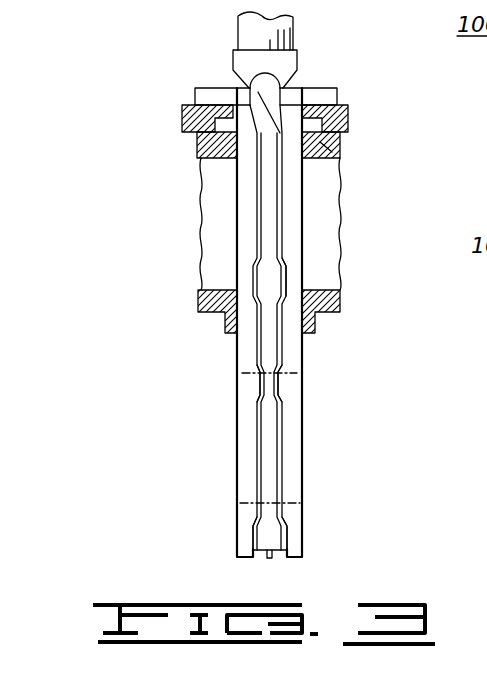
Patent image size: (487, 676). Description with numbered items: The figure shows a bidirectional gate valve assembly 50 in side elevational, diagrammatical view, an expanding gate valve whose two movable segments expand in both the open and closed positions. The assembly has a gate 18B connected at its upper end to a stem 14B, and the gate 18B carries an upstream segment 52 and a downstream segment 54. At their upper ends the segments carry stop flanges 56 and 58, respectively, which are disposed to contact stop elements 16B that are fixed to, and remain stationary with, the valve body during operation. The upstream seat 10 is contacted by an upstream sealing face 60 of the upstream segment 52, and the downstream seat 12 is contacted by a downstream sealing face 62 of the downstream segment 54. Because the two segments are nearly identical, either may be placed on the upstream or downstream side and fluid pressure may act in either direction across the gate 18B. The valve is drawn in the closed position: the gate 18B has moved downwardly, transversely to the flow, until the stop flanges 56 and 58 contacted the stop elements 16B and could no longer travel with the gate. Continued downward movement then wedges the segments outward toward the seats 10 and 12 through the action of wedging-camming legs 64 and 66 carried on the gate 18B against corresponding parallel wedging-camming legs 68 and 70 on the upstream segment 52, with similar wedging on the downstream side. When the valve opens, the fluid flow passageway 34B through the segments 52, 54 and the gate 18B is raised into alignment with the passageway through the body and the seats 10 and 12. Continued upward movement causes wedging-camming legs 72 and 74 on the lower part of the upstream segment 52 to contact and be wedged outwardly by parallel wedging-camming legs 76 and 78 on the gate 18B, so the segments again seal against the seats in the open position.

The bidirectional gate valve assembly 50 is at (180, 60).
The stem 14B is at (282, 28).
The wedging-camming leg 68 is at (250, 86).
The stop flange 58 is at (240, 92).
The stop flange 56 is at (313, 95).
The stop elements 16B is at (180, 110).
The downstream seat 12 is at (200, 160).
The wedging-camming leg 64 is at (320, 142).
The downstream sealing face 62 is at (237, 204).
The upstream sealing face 60 is at (300, 215).
The wedging-camming leg 66 is at (340, 300).
The downstream segment 54 is at (247, 443).
The upstream segment 52 is at (295, 461).
The upstream seat 10 is at (300, 147).
The wedging-camming leg 70 is at (287, 298).
The wedging-camming leg 72 is at (258, 371).
The wedging-camming leg 76 is at (280, 373).
The fluid flow passageway 34B is at (252, 502).
The wedging-camming leg 74 is at (283, 530).
The wedging-camming leg 78 is at (282, 534).
The gate 18B is at (268, 560).